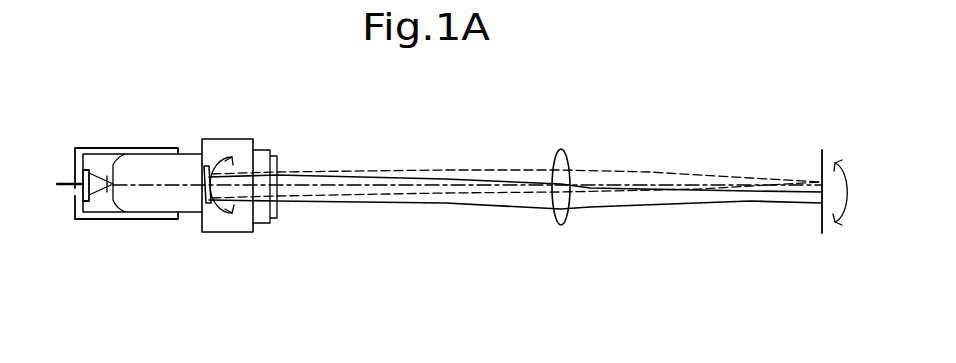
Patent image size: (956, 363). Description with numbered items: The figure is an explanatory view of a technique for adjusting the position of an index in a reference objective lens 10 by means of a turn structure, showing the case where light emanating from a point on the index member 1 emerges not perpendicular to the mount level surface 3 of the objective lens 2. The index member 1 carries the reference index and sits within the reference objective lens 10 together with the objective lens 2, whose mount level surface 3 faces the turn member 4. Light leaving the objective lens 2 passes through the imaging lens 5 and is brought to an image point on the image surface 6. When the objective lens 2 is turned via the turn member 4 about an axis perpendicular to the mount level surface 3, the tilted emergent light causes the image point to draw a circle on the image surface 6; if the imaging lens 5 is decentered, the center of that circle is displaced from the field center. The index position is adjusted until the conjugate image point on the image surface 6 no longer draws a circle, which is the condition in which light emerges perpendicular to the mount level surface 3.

The index member 1 is at (77, 190).
The objective lens 2 is at (157, 206).
The mount level surface 3 is at (197, 224).
The turn member 4 is at (234, 234).
The imaging lens 5 is at (556, 224).
The image surface 6 is at (822, 217).
The reference objective lens 10 is at (125, 240).